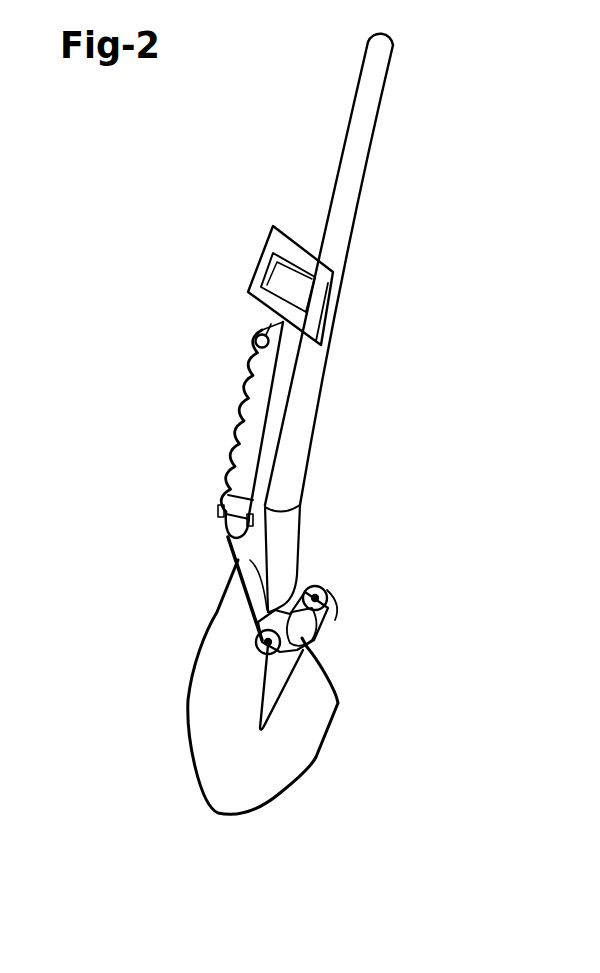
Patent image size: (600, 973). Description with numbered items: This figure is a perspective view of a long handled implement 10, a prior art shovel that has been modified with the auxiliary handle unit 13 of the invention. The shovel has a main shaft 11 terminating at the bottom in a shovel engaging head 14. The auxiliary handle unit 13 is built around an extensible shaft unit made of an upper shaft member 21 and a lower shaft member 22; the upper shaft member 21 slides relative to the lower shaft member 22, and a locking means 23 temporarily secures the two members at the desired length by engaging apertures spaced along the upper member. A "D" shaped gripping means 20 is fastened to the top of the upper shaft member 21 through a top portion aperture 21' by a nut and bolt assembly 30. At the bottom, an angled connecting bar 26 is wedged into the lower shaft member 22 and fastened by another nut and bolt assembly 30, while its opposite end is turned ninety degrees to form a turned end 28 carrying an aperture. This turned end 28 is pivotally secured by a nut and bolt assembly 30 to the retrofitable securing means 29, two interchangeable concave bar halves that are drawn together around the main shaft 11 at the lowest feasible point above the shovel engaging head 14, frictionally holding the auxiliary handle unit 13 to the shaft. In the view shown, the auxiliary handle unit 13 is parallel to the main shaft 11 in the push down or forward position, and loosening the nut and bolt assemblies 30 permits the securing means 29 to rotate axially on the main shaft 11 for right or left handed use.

The long handled implement 10 is at (252, 250).
The main shaft 11 is at (352, 218).
The auxiliary handle unit 13 is at (130, 318).
The shovel engaging head 14 is at (245, 752).
The gripping means 20 is at (252, 262).
The upper shaft member 21 is at (337, 430).
The top portion aperture 21' is at (193, 421).
The lower shaft member 22 is at (216, 525).
The locking means 23 is at (256, 341).
The angled connecting bar 26 is at (242, 570).
The turned end 28 is at (252, 617).
The retrofitable securing means 29 is at (292, 608).
The nut and bolt assembly 30 is at (330, 607).